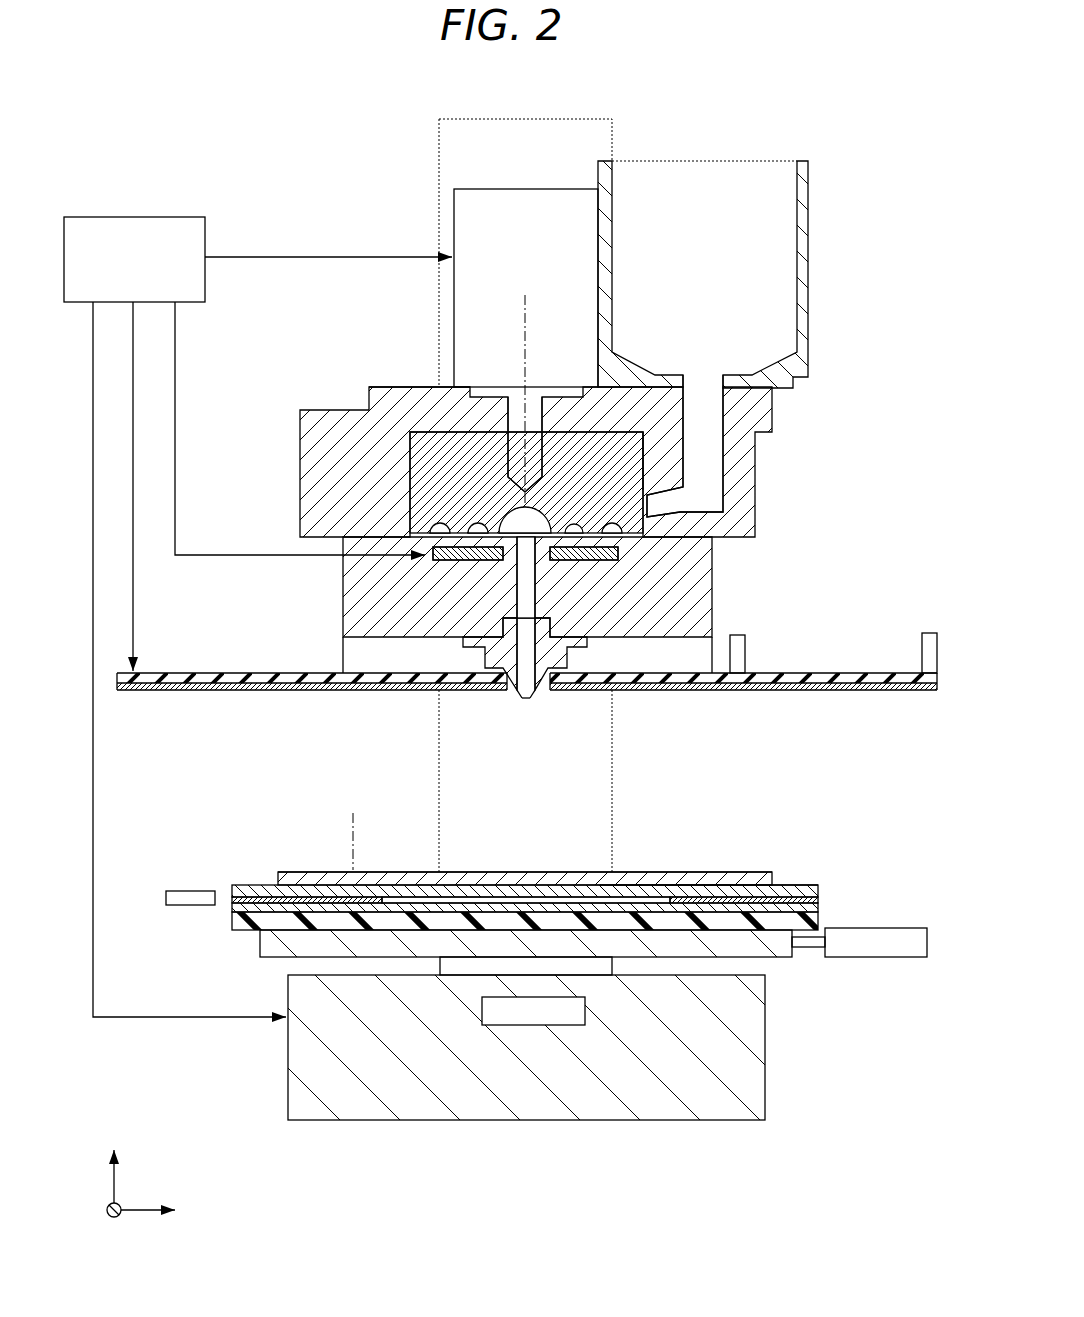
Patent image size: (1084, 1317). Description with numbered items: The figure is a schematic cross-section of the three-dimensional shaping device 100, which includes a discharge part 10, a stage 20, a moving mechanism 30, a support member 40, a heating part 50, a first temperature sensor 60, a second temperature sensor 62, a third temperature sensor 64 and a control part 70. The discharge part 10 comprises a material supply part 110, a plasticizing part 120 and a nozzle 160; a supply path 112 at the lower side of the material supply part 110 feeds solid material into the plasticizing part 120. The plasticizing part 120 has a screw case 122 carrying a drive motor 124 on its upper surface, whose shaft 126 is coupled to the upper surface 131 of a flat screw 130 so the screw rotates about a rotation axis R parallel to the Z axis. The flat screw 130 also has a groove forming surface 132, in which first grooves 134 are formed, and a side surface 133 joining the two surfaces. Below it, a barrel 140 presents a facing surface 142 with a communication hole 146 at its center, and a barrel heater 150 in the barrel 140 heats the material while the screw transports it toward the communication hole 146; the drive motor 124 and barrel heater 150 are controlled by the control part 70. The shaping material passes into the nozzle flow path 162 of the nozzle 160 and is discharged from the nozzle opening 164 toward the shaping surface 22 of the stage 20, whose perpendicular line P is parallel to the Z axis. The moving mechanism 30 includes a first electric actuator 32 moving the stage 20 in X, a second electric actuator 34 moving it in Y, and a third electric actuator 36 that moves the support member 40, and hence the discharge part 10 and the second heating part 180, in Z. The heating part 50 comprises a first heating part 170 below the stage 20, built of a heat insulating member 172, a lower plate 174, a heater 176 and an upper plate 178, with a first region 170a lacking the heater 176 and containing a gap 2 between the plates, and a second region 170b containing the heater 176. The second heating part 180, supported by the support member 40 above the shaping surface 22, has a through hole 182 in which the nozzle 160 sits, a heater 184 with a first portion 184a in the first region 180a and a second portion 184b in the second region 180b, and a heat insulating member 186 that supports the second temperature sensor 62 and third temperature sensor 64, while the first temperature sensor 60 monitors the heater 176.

The three-dimensional shaping device 100 is at (822, 95).
The discharge part 10 is at (802, 143).
The material supply part 110 is at (805, 232).
The supply path 112 is at (700, 462).
The plasticizing part 120 is at (802, 412).
The screw case 122 is at (305, 448).
The drive motor 124 is at (490, 233).
The shaft 126 is at (508, 430).
The flat screw 130 is at (513, 493).
The upper surface 131 is at (370, 408).
The groove forming surface 132 is at (440, 540).
The side surface 133 is at (647, 462).
The first grooves 134 is at (430, 512).
The barrel 140 is at (559, 587).
The facing surface 142 is at (622, 522).
The communication hole 146 is at (530, 585).
The barrel heater 150 is at (620, 553).
The nozzle 160 is at (478, 636).
The nozzle flow path 162 is at (520, 630).
The nozzle opening 164 is at (540, 700).
The support member 40 is at (700, 657).
The second temperature sensor 62 is at (745, 656).
The third temperature sensor 64 is at (927, 656).
The control part 70 is at (118, 250).
The heater 184 is at (527, 699).
The first portion 184a is at (527, 694).
The second portion 184b is at (362, 752).
The heat insulating member 186 is at (247, 682).
The through hole 182 is at (445, 700).
The second heating part 180 is at (743, 727).
The first region 180a is at (698, 696).
The second region 180b is at (838, 710).
The heating part 50 is at (786, 782).
The third electric actuator 36 is at (568, 797).
The moving mechanism 30 is at (221, 874).
The stage 20 is at (525, 849).
The shaping surface 22 is at (565, 872).
The gap 2 is at (432, 898).
The lower plate 174 is at (565, 858).
The heater 176 is at (570, 841).
The upper plate 178 is at (292, 893).
The first heating part 170 is at (709, 835).
The first region 170a is at (664, 881).
The second region 170b is at (690, 824).
The heat insulating member 172 is at (818, 912).
The second electric actuator 34 is at (530, 1010).
The first electric actuator 32 is at (860, 948).
The first temperature sensor 60 is at (190, 905).
The rotation axis R is at (522, 342).
The perpendicular line P is at (353, 845).